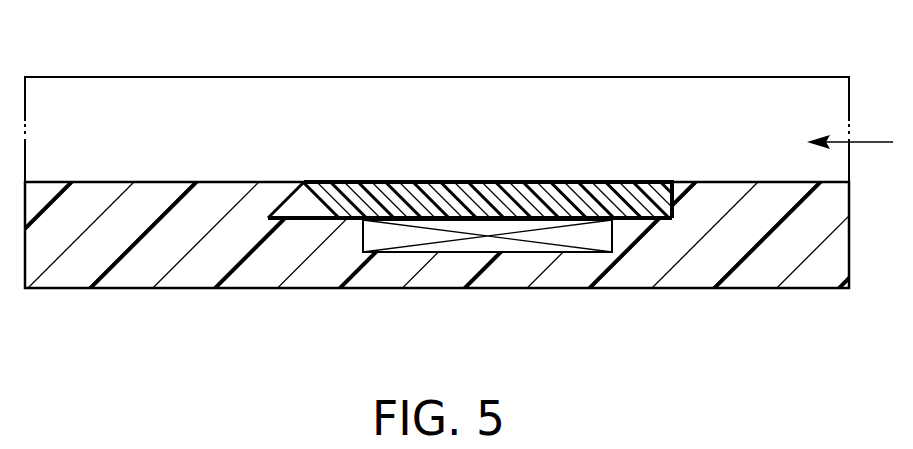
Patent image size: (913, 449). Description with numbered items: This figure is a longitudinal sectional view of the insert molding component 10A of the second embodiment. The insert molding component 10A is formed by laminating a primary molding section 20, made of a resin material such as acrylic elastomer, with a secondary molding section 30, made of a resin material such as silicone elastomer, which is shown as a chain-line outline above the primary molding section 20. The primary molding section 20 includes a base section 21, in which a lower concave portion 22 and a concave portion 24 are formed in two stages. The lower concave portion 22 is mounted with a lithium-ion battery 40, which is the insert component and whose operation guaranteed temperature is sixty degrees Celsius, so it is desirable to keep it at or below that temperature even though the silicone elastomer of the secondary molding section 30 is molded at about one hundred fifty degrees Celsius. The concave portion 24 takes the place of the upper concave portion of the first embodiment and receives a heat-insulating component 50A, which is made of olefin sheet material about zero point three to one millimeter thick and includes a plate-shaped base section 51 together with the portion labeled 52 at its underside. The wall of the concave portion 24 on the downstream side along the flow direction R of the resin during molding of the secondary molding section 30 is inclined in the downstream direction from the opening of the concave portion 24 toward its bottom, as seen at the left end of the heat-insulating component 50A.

The insert molding component 10A is at (161, 291).
The primary molding section 20 is at (755, 277).
The base section 21 is at (682, 277).
The lower concave portion 22 is at (377, 233).
The concave portion 24 is at (293, 217).
The secondary molding section 30 is at (732, 77).
The lithium-ion battery 40 is at (512, 247).
The heat-insulating component 50A is at (510, 190).
The plate-shaped base section 51 is at (587, 182).
The lower electrode 52 is at (283, 210).
The flow direction R is at (850, 128).